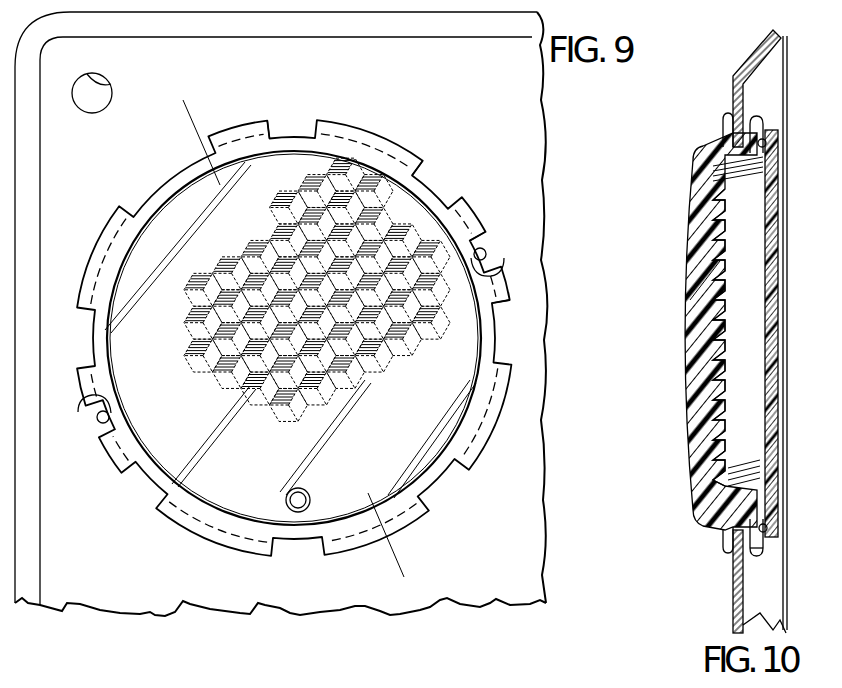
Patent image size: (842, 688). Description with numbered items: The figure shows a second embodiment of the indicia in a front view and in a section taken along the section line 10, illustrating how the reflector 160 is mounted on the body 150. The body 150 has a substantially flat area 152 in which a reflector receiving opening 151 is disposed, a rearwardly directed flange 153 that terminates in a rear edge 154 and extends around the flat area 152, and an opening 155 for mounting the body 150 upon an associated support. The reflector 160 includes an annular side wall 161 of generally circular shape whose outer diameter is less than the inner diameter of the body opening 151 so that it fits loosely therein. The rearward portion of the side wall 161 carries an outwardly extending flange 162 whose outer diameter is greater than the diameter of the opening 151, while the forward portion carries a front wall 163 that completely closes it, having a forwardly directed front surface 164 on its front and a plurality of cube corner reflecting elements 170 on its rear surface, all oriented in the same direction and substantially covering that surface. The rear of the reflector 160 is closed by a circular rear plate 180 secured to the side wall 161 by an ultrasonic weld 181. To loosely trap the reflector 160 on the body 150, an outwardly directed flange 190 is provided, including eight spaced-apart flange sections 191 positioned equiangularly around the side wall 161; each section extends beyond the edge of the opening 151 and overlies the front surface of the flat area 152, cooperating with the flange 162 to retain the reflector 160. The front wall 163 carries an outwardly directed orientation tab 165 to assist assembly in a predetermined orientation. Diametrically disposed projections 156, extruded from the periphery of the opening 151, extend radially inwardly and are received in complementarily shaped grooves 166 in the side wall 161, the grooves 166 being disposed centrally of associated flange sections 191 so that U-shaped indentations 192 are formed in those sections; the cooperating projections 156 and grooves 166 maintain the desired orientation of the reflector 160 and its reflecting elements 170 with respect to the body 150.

In FIG. 9, the section line 10 is at (193, 106).
In FIG. 9, the body 150 is at (281, 90).
In FIG. 9, the reflector receiving opening 151 is at (432, 193).
In FIG. 10, the reflector receiving opening 151 is at (756, 128).
In FIG. 9, the flat area 152 is at (415, 81).
In FIG. 10, the flat area 152 is at (734, 97).
In FIG. 9, the rearwardly directed flange 153 is at (82, 25).
In FIG. 10, the rearwardly directed flange 153 is at (757, 53).
In FIG. 10, the rear edge 154 is at (785, 34).
In FIG. 9, the opening 155 is at (111, 84).
In FIG. 9, the projections 156 is at (487, 256).
In FIG. 9, the reflector 160 is at (240, 114).
In FIG. 10, the reflector 160 is at (678, 343).
In FIG. 10, the annular side wall 161 is at (733, 158).
In FIG. 10, the outwardly extending flange 162 is at (759, 556).
In FIG. 10, the front wall 163 is at (697, 283).
In FIG. 9, the front surface 164 is at (218, 258).
In FIG. 10, the front surface 164 is at (688, 218).
In FIG. 9, the orientation tab 165 is at (305, 504).
In FIG. 9, the grooves 166 is at (497, 271).
In FIG. 9, the cube corner reflecting elements 170 is at (380, 172).
In FIG. 10, the cube corner reflecting elements 170 is at (716, 293).
In FIG. 10, the rear plate 180 is at (769, 386).
In FIG. 10, the ultrasonic weld 181 is at (770, 142).
In FIG. 9, the outwardly directed flange 190 is at (525, 428).
In FIG. 9, the flange sections 191 is at (473, 228).
In FIG. 10, the flange sections 191 is at (723, 127).
In FIG. 9, the U-shaped indentations 192 is at (294, 332).